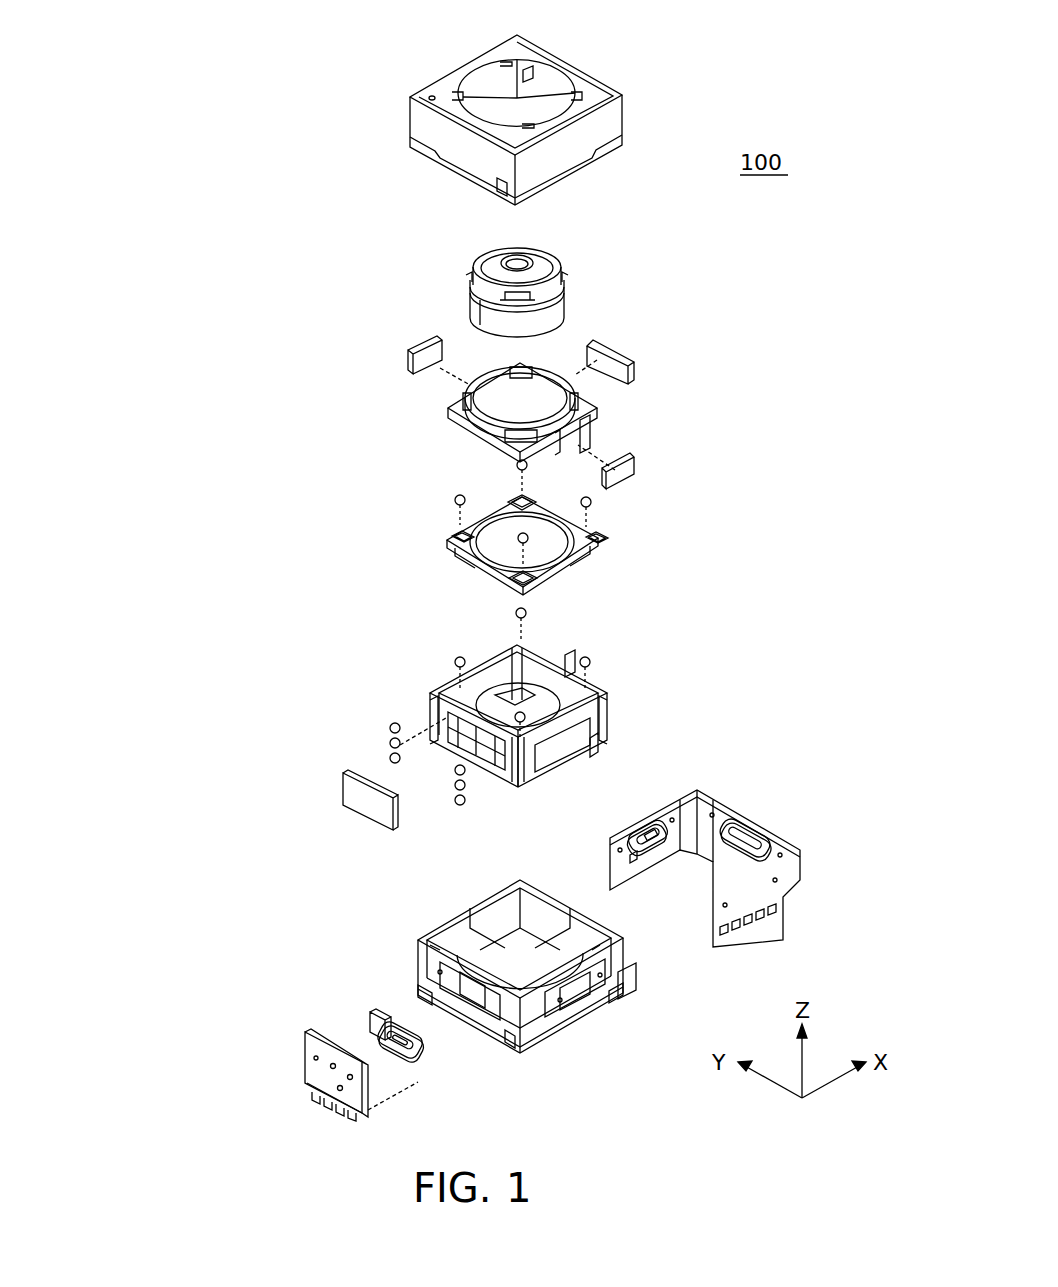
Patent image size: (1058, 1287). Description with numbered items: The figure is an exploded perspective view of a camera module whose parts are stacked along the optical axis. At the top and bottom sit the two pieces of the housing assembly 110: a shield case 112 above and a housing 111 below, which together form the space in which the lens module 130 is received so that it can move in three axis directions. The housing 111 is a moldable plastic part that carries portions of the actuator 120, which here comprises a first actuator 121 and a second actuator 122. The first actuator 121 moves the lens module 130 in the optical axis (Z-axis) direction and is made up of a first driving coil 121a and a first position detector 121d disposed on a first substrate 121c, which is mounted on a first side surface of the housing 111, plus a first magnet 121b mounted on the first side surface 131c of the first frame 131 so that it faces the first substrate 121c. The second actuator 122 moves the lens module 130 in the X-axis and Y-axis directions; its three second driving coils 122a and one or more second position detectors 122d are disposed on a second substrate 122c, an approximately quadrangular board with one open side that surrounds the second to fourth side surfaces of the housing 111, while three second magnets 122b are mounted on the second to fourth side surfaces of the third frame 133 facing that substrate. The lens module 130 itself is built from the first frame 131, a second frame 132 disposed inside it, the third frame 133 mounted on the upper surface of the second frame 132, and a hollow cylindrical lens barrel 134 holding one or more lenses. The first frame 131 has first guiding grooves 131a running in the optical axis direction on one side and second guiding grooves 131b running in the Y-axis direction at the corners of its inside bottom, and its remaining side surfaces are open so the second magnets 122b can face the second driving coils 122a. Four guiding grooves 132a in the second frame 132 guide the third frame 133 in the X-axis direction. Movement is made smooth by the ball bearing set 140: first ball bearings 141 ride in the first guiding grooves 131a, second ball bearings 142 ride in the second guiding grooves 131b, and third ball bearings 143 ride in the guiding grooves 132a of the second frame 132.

The housing assembly 110 is at (127, 67).
The housing 111 is at (595, 1075).
The shield case 112 is at (428, 131).
The actuator 120 is at (200, 217).
The first actuator 121 is at (127, 172).
The first driving coil 121a is at (460, 1096).
The first magnet 121b is at (345, 792).
The first substrate 121c is at (305, 1046).
The first position detector 121d is at (372, 1020).
The second actuator 122 is at (127, 312).
The second driving coil 122a is at (813, 897).
The second magnet 122b is at (666, 477).
The second substrate 122c is at (660, 984).
The second position detector 122d is at (660, 905).
The lens module 130 is at (127, 475).
The first frame 131 is at (688, 683).
The first guiding groove 131a is at (514, 790).
The second guiding groove 131b is at (574, 657).
The first side surface 131c is at (395, 760).
The second frame 132 is at (665, 578).
The guiding groove 132a is at (600, 536).
The third frame 133 is at (475, 421).
The lens barrel 134 is at (470, 316).
The ball bearing set 140 is at (127, 620).
The first ball bearing 141 is at (395, 727).
The second ball bearing 142 is at (455, 657).
The third ball bearing 143 is at (457, 499).